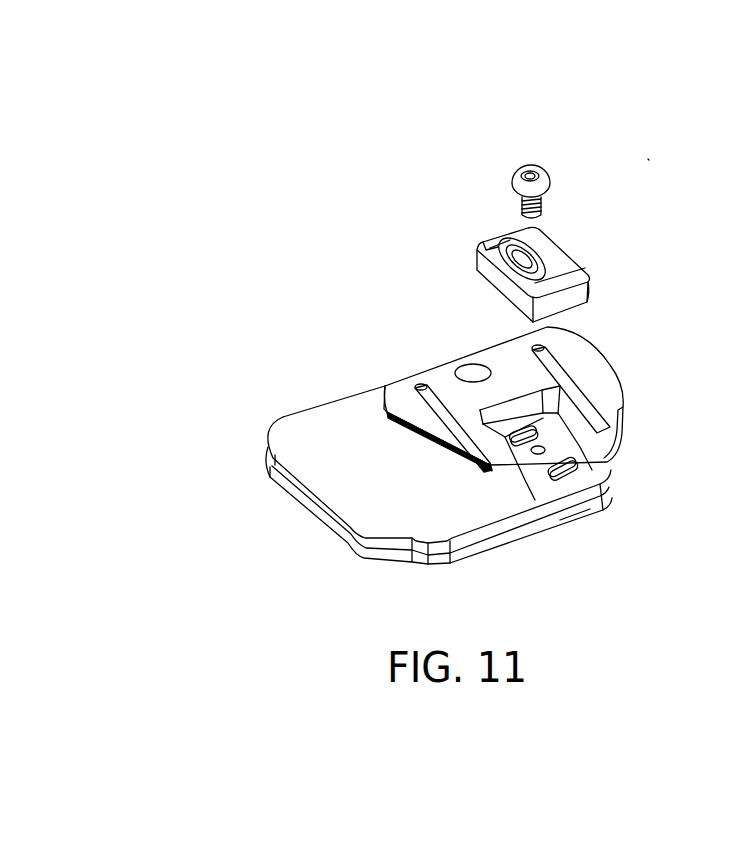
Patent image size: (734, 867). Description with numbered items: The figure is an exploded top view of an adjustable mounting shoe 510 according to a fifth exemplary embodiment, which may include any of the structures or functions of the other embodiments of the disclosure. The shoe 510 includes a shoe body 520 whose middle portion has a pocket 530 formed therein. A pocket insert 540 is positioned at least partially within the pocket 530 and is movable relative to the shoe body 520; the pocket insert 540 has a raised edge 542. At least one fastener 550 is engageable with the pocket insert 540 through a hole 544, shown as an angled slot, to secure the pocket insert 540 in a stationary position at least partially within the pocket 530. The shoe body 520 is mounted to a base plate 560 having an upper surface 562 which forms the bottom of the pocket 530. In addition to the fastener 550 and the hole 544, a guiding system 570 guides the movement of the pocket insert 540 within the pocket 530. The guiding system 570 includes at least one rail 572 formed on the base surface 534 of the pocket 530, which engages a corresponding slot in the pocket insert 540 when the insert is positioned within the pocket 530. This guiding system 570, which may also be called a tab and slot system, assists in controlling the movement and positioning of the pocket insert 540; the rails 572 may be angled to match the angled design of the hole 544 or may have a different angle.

The adjustable mounting shoe 510 is at (676, 122).
The shoe body 520 is at (587, 363).
The pocket 530 is at (582, 462).
The base surface 534 is at (565, 440).
The pocket insert 540 is at (560, 263).
The raised edge 542 is at (592, 272).
The hole 544 is at (492, 241).
The fastener 550 is at (506, 173).
The base plate 560 is at (340, 533).
The upper surface 562 is at (307, 457).
The guiding system 570 is at (590, 537).
The rail 572 is at (525, 440).